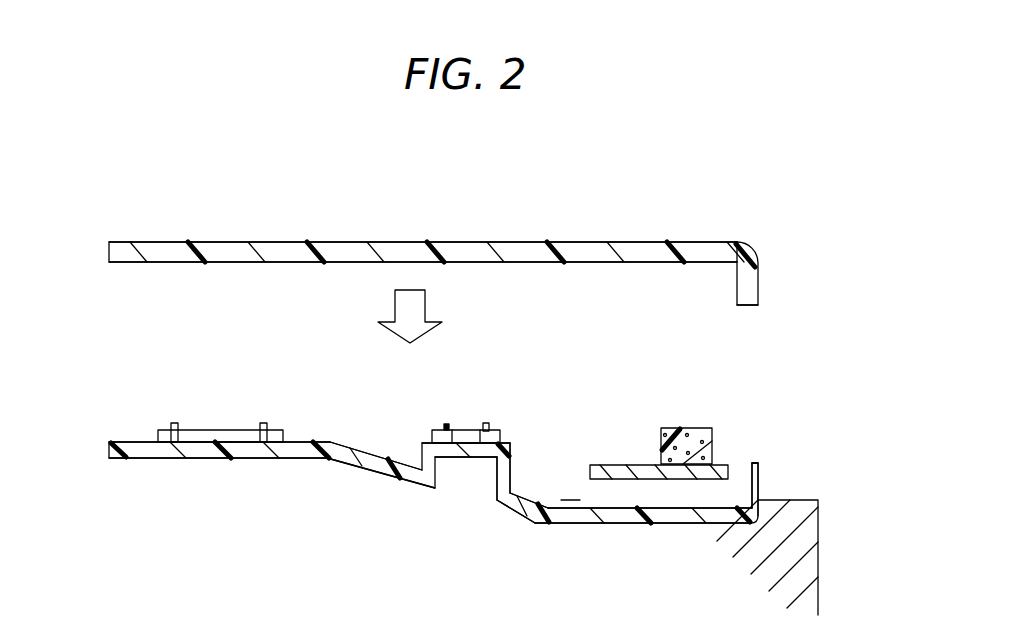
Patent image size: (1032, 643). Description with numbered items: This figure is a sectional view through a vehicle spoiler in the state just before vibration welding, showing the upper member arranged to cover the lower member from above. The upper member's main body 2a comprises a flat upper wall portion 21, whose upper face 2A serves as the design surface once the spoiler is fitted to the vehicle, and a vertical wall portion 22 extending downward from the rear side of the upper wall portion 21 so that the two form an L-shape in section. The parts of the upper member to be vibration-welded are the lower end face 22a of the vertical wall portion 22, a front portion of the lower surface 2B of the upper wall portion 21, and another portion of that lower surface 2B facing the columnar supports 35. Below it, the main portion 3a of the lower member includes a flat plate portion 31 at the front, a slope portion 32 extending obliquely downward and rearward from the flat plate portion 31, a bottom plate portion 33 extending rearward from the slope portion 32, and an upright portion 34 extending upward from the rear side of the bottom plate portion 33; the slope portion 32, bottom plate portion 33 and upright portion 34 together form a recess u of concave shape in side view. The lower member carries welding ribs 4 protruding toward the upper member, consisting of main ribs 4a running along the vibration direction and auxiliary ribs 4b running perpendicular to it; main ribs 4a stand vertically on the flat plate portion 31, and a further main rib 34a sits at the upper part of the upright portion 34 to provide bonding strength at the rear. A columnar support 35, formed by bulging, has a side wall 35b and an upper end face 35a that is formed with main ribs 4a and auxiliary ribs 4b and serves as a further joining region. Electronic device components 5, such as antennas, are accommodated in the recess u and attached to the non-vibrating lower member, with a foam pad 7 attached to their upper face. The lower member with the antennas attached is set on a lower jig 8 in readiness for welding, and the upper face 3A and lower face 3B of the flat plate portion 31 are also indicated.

The upper wall portion 21 is at (432, 211).
The main body 2a is at (530, 243).
The upper face 2A is at (220, 243).
The lower surface 2B is at (161, 262).
The vertical wall portion 22 is at (758, 275).
The lower end face 22a is at (745, 305).
The flat plate portion 31 is at (396, 446).
The main portion 3a is at (138, 441).
The upper surface of bottom plate 3A is at (312, 440).
The lower surface of bottom plate 3B is at (247, 460).
The slope portion 32 is at (375, 453).
The bottom plate portion 33 is at (610, 515).
The upright portion 34 is at (760, 472).
The main rib 34a is at (757, 462).
The columnar support 35 is at (459, 440).
The upper end face 35a is at (484, 371).
The side wall 35b is at (515, 473).
The welding rib 4 is at (222, 432).
The main rib 4a is at (172, 430).
The auxiliary rib 4b is at (361, 381).
The electronic device component 5 is at (612, 463).
The foam pad 7 is at (690, 431).
The lower jig 8 is at (818, 563).
The recess u is at (570, 489).